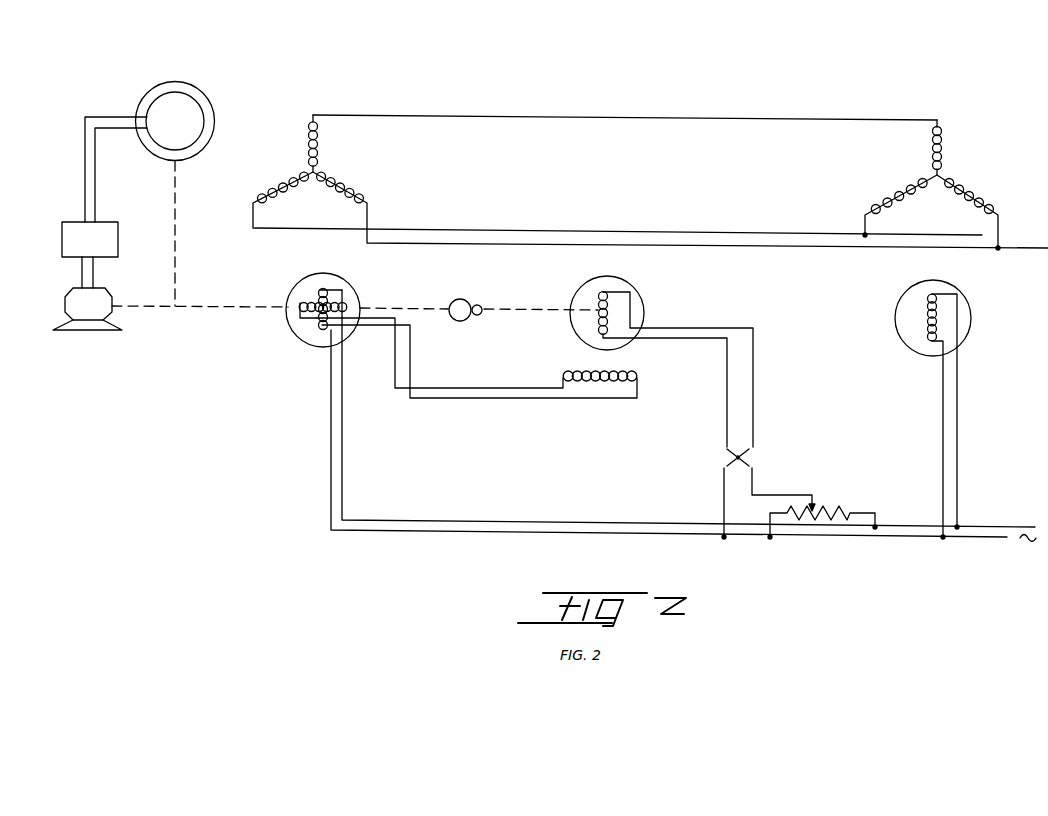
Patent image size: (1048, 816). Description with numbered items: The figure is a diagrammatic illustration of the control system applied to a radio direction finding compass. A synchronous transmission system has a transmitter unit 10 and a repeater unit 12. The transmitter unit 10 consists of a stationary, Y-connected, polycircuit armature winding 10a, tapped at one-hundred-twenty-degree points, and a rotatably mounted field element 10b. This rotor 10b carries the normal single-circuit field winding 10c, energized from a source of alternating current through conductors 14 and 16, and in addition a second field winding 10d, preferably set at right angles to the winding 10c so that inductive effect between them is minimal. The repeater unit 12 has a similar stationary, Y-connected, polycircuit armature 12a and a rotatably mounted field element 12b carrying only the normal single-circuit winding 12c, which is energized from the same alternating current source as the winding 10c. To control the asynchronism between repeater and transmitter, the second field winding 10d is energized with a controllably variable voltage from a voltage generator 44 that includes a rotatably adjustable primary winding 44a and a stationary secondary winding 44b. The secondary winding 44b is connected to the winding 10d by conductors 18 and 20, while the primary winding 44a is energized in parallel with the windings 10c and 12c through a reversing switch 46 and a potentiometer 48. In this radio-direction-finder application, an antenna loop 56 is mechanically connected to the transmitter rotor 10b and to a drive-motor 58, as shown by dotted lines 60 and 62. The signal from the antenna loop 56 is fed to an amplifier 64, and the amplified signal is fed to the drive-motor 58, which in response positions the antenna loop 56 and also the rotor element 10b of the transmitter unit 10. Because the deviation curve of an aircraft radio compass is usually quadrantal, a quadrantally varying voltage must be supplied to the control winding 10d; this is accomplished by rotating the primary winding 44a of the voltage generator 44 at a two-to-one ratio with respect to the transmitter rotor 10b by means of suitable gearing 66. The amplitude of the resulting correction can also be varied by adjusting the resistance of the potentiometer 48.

The transmitter unit 10 is at (650, 185).
The polycircuit armature winding 10a is at (320, 150).
The field element 10b is at (331, 335).
The single-circuit field winding 10c is at (320, 331).
The second field winding 10d is at (347, 303).
The repeater unit 12 is at (927, 201).
The polycircuit armature 12a is at (943, 165).
The field element 12b is at (899, 409).
The single-circuit winding 12c is at (927, 322).
The conductor 14 is at (331, 432).
The conductor 16 is at (342, 455).
The conductor 18 is at (455, 389).
The conductor 20 is at (490, 399).
The voltage generator 44 is at (637, 358).
The primary winding 44a is at (600, 300).
The secondary winding 44b is at (617, 373).
The reversing switch 46 is at (755, 458).
The potentiometer 48 is at (818, 505).
The antenna loop 56 is at (213, 103).
The drive-motor 58 is at (65, 302).
The dotted line 60 is at (176, 266).
The dotted line 62 is at (227, 307).
The amplifier 64 is at (70, 233).
The gearing 66 is at (462, 300).